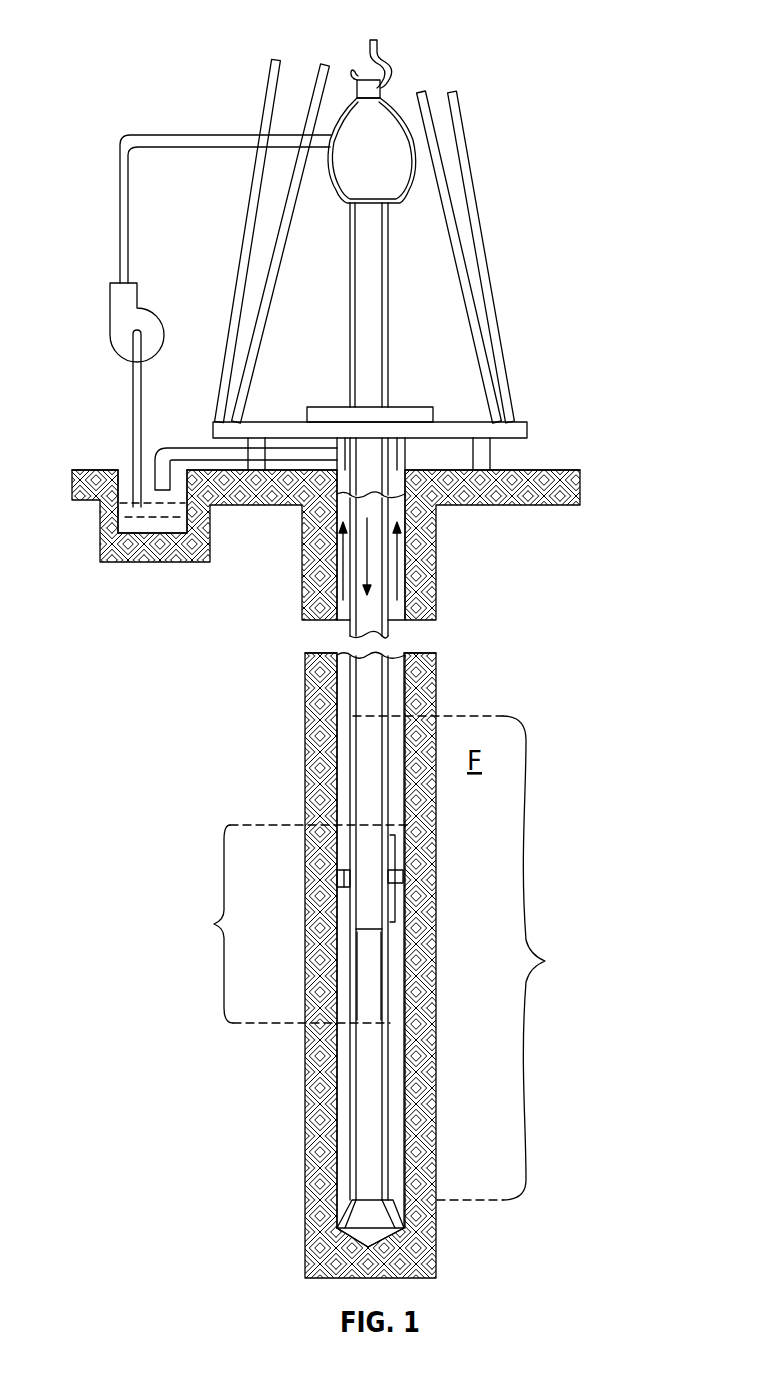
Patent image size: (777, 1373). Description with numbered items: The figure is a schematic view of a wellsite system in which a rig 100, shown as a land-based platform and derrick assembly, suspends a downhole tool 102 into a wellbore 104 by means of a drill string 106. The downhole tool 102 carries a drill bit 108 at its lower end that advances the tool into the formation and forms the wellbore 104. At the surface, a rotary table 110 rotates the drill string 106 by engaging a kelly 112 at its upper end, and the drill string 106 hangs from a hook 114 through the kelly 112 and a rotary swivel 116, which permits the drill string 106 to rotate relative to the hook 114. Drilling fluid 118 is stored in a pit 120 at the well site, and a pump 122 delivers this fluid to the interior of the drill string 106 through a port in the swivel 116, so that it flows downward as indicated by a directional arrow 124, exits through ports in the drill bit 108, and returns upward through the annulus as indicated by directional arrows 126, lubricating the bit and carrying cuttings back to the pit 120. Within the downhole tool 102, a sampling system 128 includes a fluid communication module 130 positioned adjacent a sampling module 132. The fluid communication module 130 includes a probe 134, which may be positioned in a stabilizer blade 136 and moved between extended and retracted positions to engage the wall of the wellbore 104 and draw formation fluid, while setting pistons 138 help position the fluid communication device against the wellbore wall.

The rig 100 is at (133, 36).
The downhole tool 102 is at (339, 874).
The wellbore 104 is at (406, 622).
The drill string 106 is at (366, 674).
The drill bit 108 is at (354, 1215).
The rotary table 110 is at (400, 407).
The kelly 112 is at (378, 278).
The hook 114 is at (377, 43).
The rotary swivel 116 is at (345, 203).
The drilling fluid 118 is at (157, 536).
The pit 120 is at (113, 522).
The pump 122 is at (122, 355).
The directional arrow 124 is at (363, 556).
The directional arrows 126 is at (396, 544).
The sampling system 128 is at (285, 924).
The fluid communication module 130 is at (364, 928).
The sampling module 132 is at (363, 960).
The probe 134 is at (400, 880).
The stabilizer blade 136 is at (396, 860).
The setting piston 138 is at (338, 877).